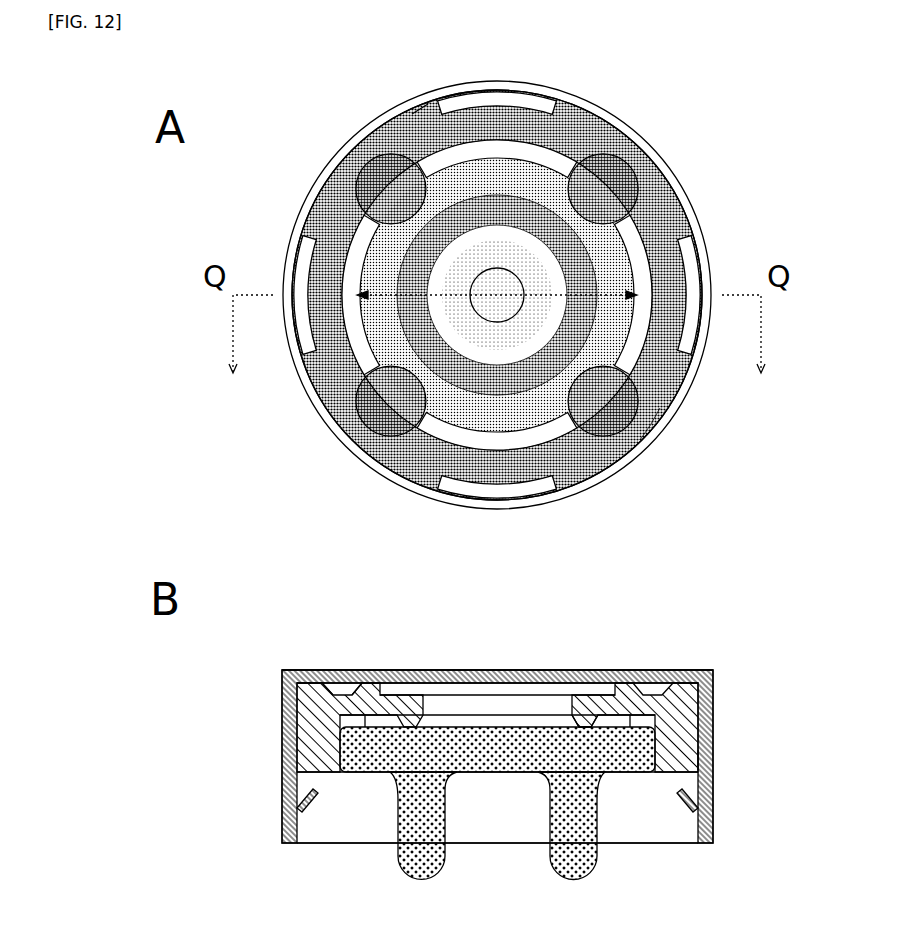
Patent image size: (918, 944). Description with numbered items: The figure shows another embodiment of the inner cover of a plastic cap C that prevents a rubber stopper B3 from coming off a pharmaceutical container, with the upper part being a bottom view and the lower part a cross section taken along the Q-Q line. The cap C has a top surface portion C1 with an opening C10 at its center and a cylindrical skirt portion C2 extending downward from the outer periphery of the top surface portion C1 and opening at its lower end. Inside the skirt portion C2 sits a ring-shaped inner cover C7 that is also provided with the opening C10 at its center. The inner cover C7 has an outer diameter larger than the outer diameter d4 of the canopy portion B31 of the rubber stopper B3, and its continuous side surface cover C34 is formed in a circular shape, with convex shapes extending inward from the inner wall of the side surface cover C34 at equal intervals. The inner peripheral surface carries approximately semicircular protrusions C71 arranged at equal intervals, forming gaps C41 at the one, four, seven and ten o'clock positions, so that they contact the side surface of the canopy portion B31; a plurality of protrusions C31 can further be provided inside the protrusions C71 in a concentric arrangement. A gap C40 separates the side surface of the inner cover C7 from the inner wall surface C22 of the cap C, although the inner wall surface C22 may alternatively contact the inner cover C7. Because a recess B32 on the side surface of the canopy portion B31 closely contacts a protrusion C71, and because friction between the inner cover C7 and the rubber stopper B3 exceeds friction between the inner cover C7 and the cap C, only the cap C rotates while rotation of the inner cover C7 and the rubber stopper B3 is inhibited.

The plastic cap C is at (677, 88).
The top surface portion C1 is at (603, 668).
The skirt portion C2 is at (713, 795).
The inner wall surface C22 is at (285, 752).
The inner cover C7 is at (677, 205).
The protrusion C71 is at (637, 170).
The opening C10 is at (497, 708).
The protrusion C31 is at (583, 713).
The side surface cover C34 is at (545, 103).
The gap C40 is at (318, 203).
The gap C41 is at (418, 116).
The rubber stopper B3 is at (375, 375).
The canopy portion B31 is at (617, 345).
The recess B32 is at (657, 418).
The outer diameter d4 is at (497, 285).